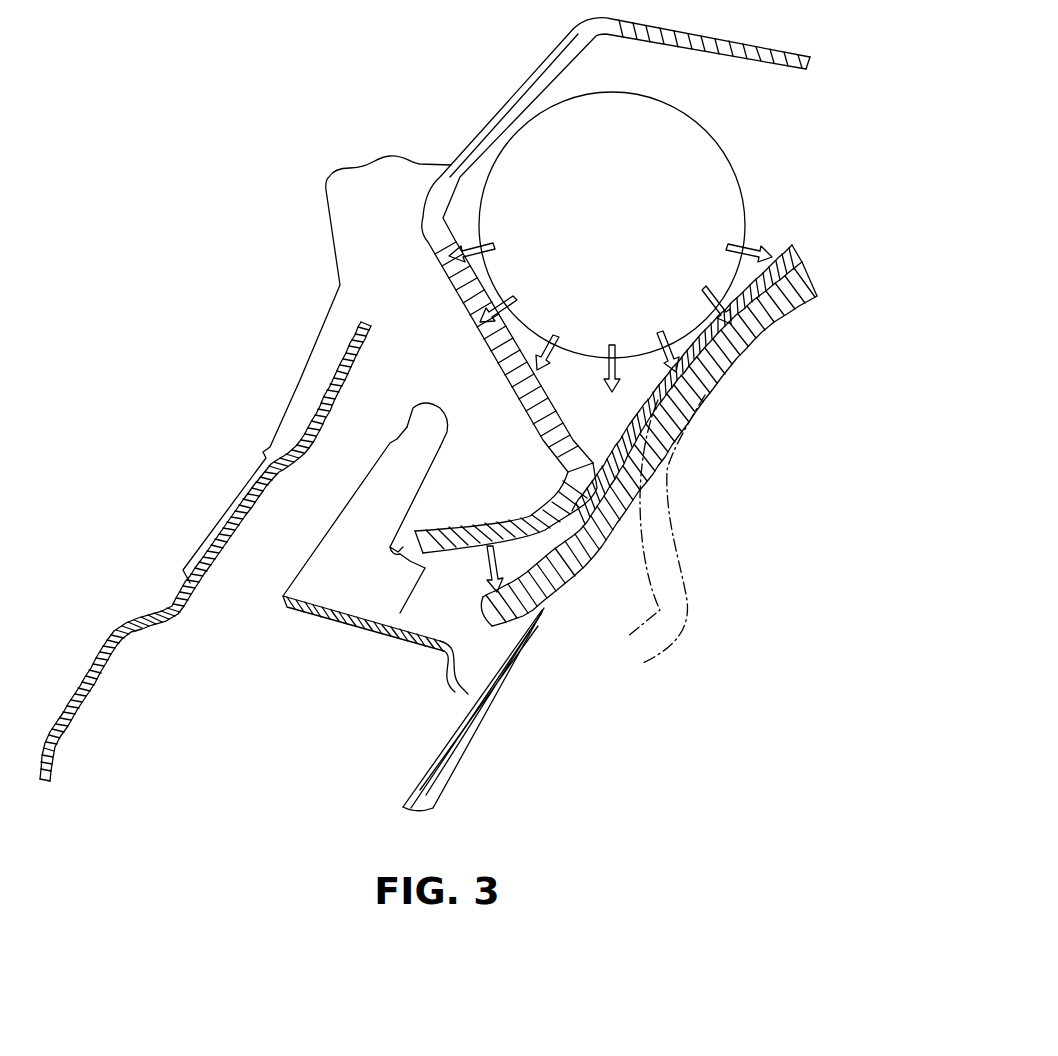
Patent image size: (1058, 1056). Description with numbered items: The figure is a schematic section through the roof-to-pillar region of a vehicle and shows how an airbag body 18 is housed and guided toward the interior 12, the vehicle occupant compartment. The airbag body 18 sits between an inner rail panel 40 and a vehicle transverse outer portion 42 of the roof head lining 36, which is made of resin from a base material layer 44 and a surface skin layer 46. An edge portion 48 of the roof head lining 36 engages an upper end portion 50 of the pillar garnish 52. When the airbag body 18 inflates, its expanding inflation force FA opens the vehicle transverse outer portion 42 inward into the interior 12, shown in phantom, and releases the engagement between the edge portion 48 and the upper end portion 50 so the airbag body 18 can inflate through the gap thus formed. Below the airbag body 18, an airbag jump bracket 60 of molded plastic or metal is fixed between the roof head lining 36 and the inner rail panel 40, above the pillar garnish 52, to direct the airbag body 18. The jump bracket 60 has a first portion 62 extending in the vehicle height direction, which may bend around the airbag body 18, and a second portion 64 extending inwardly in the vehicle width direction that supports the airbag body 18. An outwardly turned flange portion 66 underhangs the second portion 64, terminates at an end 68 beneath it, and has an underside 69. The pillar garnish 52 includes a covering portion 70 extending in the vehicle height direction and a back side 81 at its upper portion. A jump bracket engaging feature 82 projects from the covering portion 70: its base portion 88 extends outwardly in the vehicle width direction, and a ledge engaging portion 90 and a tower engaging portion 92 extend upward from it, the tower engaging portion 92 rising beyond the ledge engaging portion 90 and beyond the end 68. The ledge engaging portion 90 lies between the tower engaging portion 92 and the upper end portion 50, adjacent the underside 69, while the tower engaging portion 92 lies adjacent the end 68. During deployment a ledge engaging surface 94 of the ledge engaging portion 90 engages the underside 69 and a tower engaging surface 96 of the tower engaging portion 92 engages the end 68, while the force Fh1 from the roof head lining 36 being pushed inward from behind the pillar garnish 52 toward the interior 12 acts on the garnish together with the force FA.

The interior 12 is at (741, 645).
The airbag body 18 is at (708, 172).
The roof head lining 36 is at (603, 529).
The inner rail panel 40 is at (330, 219).
The vehicle transverse outer portion 42 is at (661, 430).
The base material layer 44 is at (798, 258).
The surface skin layer 46 is at (818, 295).
The edge portion 48 is at (552, 602).
The upper end portion 50 is at (458, 709).
The pillar garnish 52 is at (432, 757).
The airbag jump bracket 60 is at (581, 285).
The first portion 62 is at (436, 190).
The second portion 64 is at (431, 250).
The outwardly turned flange portion 66 is at (488, 543).
The end 68 is at (413, 530).
The underside 69 is at (410, 560).
The covering portion 70 is at (467, 745).
The back side 81 is at (450, 722).
The jump bracket engaging feature 82 is at (349, 408).
The base portion 88 is at (420, 640).
The ledge engaging portion 90 is at (401, 613).
The tower engaging portion 92 is at (375, 531).
The ledge engaging surface 94 is at (390, 553).
The tower engaging surface 96 is at (413, 405).
The inflation force FA is at (705, 290).
The head lining force Fh1 is at (483, 567).